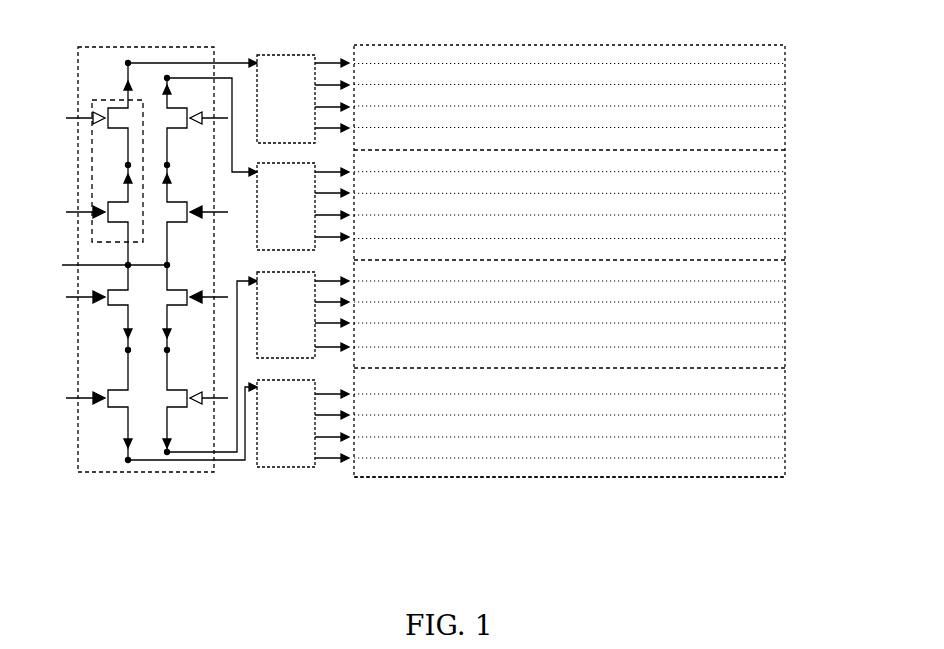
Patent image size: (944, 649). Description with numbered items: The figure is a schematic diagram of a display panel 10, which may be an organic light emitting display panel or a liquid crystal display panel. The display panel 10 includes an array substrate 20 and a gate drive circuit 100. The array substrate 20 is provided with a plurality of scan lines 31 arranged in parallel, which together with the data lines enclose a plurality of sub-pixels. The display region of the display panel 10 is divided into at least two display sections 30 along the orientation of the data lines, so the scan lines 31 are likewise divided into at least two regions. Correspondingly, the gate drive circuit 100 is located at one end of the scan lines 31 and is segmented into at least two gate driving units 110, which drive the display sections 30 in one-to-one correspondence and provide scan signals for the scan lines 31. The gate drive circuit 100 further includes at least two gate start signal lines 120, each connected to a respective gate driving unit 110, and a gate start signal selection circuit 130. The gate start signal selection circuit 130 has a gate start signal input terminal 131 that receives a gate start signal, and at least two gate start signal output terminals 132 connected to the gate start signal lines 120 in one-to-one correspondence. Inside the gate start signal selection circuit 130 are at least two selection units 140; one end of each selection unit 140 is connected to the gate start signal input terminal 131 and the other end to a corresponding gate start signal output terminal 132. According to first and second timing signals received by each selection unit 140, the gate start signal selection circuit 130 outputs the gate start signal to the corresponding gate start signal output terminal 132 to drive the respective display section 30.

The display panel 10 is at (450, 289).
The array substrate 20 is at (613, 283).
The display section 30 is at (811, 423).
The scan line 31 is at (557, 478).
The gate drive circuit 100 is at (188, 289).
The gate driving unit 110 is at (303, 261).
The gate start signal line 120 is at (232, 60).
The gate start signal selection circuit 130 is at (128, 284).
The gate start signal input terminal 131 is at (66, 265).
The gate start signal output terminal 132 is at (147, 262).
The selection unit 140 is at (92, 158).